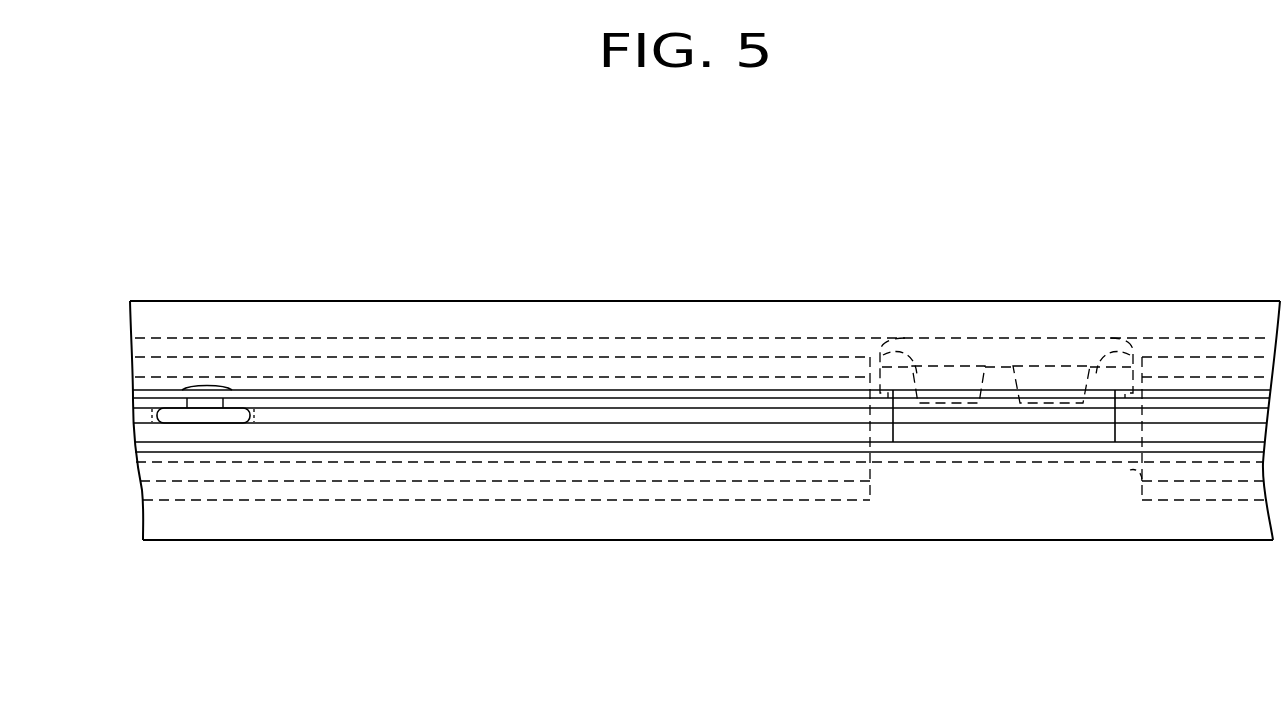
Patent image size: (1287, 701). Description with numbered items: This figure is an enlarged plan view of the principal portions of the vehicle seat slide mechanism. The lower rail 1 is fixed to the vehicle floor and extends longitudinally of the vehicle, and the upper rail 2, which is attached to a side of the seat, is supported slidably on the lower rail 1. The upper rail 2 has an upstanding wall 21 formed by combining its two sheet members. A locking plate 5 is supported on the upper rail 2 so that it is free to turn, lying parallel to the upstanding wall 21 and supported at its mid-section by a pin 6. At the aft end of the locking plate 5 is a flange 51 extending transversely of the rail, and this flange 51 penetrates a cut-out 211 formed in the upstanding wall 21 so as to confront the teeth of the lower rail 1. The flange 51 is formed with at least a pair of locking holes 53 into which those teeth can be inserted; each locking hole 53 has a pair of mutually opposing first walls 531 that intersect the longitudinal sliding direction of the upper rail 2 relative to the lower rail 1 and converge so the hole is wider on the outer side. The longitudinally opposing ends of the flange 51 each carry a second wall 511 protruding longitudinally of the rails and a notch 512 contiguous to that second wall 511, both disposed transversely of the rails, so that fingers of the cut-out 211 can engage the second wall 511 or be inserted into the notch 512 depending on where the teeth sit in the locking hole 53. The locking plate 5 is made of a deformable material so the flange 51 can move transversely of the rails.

The lower rail 1 is at (464, 550).
The upper rail 2 is at (365, 385).
The upstanding wall 21 is at (517, 408).
The cut-out 211 is at (1141, 470).
The locking plate 5 is at (592, 450).
The flange 51 is at (1005, 357).
The second wall 511 is at (864, 354).
The notch 512 is at (896, 420).
The locking hole 53 is at (948, 364).
The first wall 531 is at (907, 345).
The pin 6 is at (207, 418).